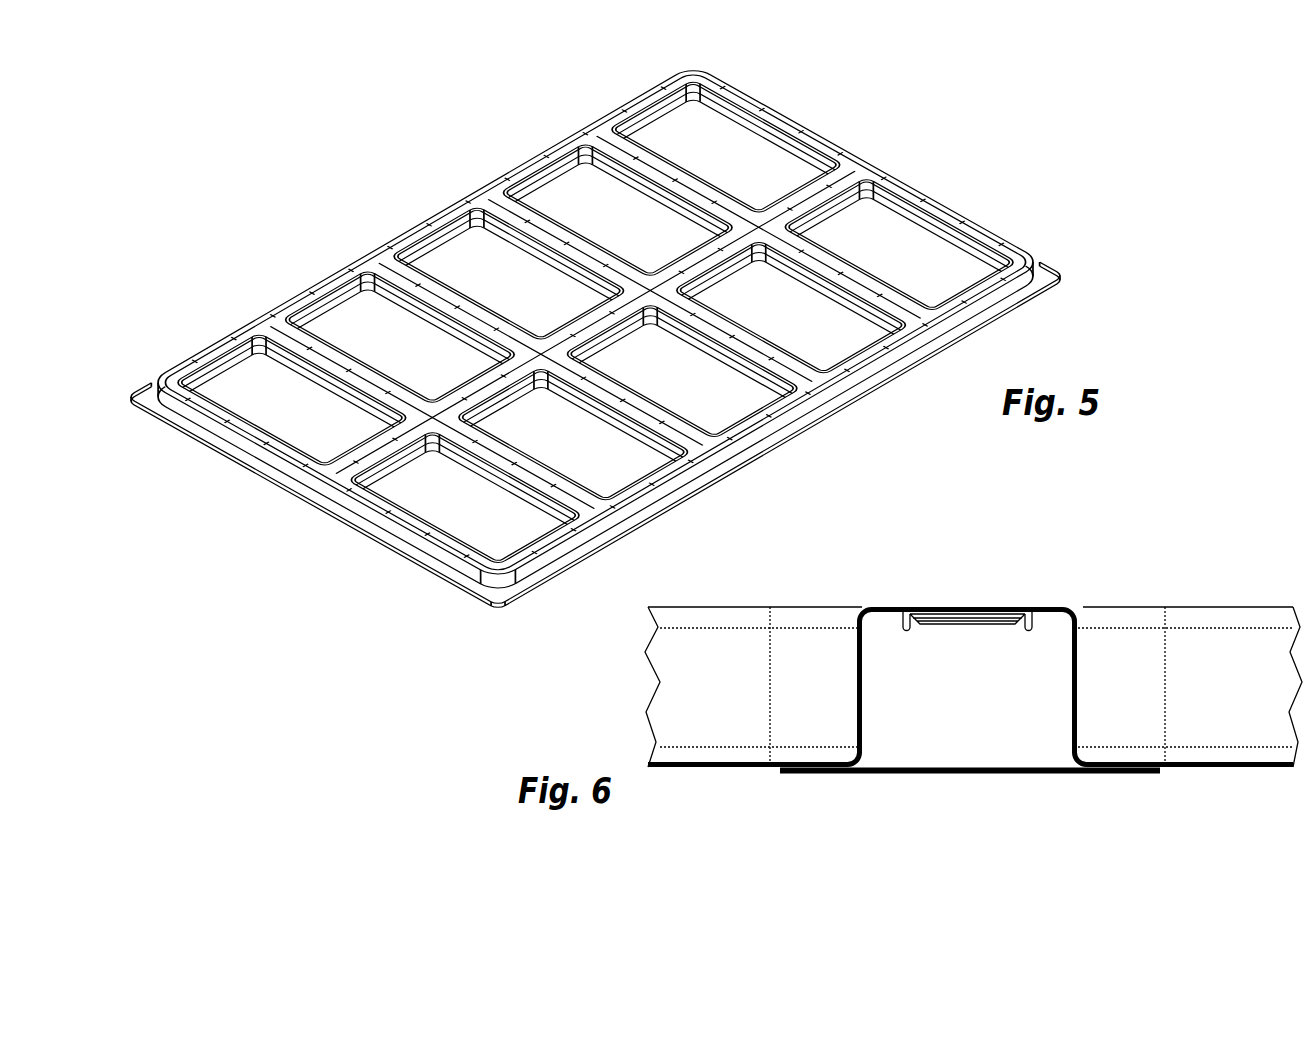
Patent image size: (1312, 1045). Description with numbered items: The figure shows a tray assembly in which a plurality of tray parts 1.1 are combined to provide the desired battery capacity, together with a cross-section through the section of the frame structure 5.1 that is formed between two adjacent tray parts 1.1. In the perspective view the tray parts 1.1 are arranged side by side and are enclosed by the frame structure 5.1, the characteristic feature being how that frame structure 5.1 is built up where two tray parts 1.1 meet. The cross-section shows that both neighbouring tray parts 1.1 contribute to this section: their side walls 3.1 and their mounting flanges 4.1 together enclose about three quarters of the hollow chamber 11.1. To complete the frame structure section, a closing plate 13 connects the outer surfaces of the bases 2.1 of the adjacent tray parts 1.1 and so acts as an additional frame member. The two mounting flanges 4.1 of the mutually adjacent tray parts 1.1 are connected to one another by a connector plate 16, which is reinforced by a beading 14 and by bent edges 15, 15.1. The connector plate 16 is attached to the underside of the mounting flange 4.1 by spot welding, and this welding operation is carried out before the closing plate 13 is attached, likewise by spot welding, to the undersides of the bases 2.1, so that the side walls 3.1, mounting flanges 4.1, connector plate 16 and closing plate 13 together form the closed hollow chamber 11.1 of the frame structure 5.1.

In FIG. 5, the tray part 1.1 is at (764, 147).
In FIG. 6, the tray part 1.1 is at (738, 622).
In FIG. 6, the base 2.1 is at (745, 761).
In FIG. 6, the side wall 3.1 is at (724, 681).
In FIG. 6, the mounting flange 4.1 is at (913, 607).
In FIG. 5, the frame structure 5.1 is at (386, 557).
In FIG. 6, the hollow chamber 11.1 is at (987, 704).
In FIG. 6, the closing plate 13 is at (1078, 772).
In FIG. 6, the beading 14 is at (963, 629).
In FIG. 6, the bent edge 15 is at (904, 631).
In FIG. 6, the bent edge 15.1 is at (1040, 627).
In FIG. 6, the connector plate 16 is at (945, 611).